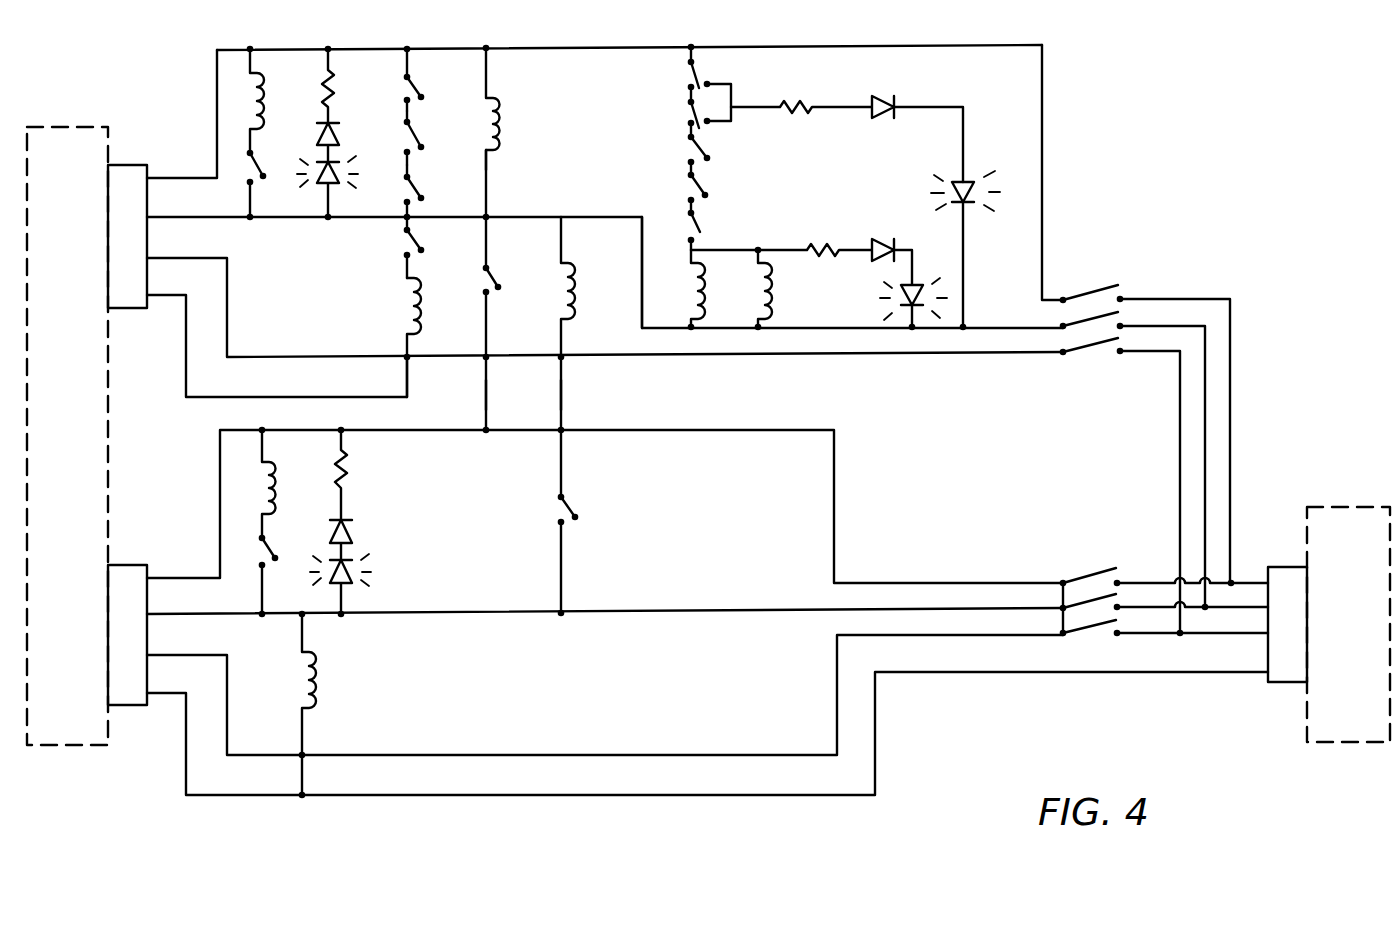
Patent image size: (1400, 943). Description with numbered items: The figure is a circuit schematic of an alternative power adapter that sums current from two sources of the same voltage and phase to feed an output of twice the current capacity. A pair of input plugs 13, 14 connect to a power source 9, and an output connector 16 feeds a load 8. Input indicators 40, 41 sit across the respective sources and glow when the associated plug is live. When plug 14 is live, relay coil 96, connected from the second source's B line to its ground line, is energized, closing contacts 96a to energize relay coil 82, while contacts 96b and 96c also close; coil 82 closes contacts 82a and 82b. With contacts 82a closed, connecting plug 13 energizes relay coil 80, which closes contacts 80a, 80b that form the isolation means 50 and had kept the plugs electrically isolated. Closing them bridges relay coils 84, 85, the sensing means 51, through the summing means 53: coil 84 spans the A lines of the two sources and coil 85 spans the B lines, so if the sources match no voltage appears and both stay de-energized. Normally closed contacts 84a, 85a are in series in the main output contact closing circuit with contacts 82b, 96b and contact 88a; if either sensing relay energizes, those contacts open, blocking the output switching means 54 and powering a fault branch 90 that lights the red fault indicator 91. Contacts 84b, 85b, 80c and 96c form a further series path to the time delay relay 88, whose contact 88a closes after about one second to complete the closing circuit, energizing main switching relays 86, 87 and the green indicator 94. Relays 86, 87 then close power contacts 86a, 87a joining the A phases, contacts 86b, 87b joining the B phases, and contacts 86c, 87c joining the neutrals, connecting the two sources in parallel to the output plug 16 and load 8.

The load 8 is at (1340, 505).
The power source 9 is at (105, 127).
The input plug 13 is at (125, 165).
The input plug 14 is at (128, 565).
The output connector 16 is at (1273, 567).
The input indicator 40 is at (340, 158).
The input indicator 41 is at (353, 563).
The isolation means 50 is at (509, 322).
The sensing means 51 is at (506, 150).
The summing means 53 is at (620, 192).
The output switching means 54 is at (1128, 455).
The relay coil 80 is at (266, 92).
The relay contact 80a is at (495, 282).
The relay contact 80b is at (568, 503).
The relay contact 80c is at (418, 187).
The relay coil 82 is at (298, 463).
The relay contact 82a is at (250, 184).
The relay contact 82b is at (697, 183).
The relay coil 84 is at (503, 103).
The relay contact 84a is at (690, 73).
The relay contact 84b is at (417, 88).
The relay coil 85 is at (580, 272).
The relay contact 85a is at (691, 108).
The relay contact 85b is at (417, 140).
The main switching relay 86 is at (712, 282).
The power contact 86a is at (1083, 292).
The power contact 86b is at (1080, 318).
The power contact 86c is at (1085, 352).
The main switching relay 87 is at (780, 280).
The power contact 87a is at (1093, 572).
The power contact 87b is at (1090, 600).
The power contact 87c is at (1088, 630).
The time delay relay 88 is at (418, 313).
The relay contact 88a is at (700, 147).
The fault branch 90 is at (988, 122).
The fault indicator 91 is at (968, 180).
The indicator 94 is at (903, 300).
The relay coil 96 is at (310, 668).
The relay contact 96a is at (262, 567).
The relay contact 96b is at (698, 223).
The relay contact 96c is at (407, 243).